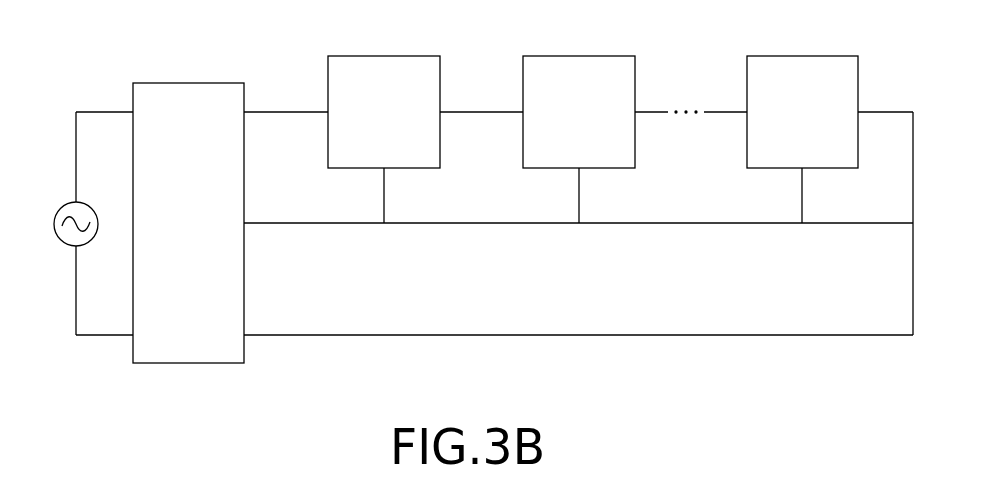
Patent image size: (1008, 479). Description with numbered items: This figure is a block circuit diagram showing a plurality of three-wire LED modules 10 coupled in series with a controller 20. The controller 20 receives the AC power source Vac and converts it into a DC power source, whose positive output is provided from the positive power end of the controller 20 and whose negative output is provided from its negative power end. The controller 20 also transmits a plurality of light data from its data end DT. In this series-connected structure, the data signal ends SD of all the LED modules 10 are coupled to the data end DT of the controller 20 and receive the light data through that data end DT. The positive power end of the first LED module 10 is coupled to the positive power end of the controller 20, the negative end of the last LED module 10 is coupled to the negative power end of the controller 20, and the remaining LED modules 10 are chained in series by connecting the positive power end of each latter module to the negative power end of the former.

The LED module 10 is at (383, 63).
The controller 20 is at (188, 90).
The AC power source Vac is at (69, 223).
The data end DT is at (558, 223).
The data signal end SD is at (606, 195).